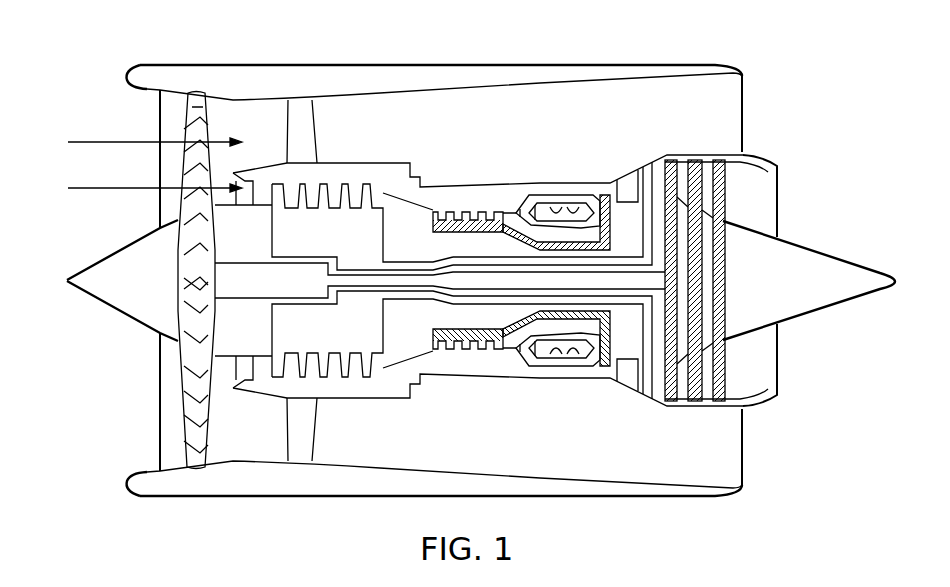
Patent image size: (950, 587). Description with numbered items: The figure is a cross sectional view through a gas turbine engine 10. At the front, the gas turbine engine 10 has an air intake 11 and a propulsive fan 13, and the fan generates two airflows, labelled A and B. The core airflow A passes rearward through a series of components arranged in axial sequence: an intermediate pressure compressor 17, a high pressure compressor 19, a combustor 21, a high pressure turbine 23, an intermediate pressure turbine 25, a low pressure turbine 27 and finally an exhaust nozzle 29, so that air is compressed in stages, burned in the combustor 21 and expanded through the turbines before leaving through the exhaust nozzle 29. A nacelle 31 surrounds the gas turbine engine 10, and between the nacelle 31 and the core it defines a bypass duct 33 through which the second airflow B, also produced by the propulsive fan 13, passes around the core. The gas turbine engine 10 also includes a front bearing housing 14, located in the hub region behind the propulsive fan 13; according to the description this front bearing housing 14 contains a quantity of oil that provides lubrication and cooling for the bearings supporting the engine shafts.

The gas turbine engine 10 is at (460, 257).
The air intake 11 is at (170, 127).
The propulsive fan 13 is at (192, 92).
The front bearing housing 14 is at (247, 322).
The intermediate pressure compressor 17 is at (335, 223).
The high pressure compressor 19 is at (468, 210).
The combustor 21 is at (568, 203).
The high pressure turbine 23 is at (605, 193).
The intermediate pressure turbine 25 is at (652, 188).
The low pressure turbine 27 is at (723, 175).
The exhaust nozzle 29 is at (755, 203).
The nacelle 31 is at (278, 96).
The bypass duct 33 is at (512, 129).